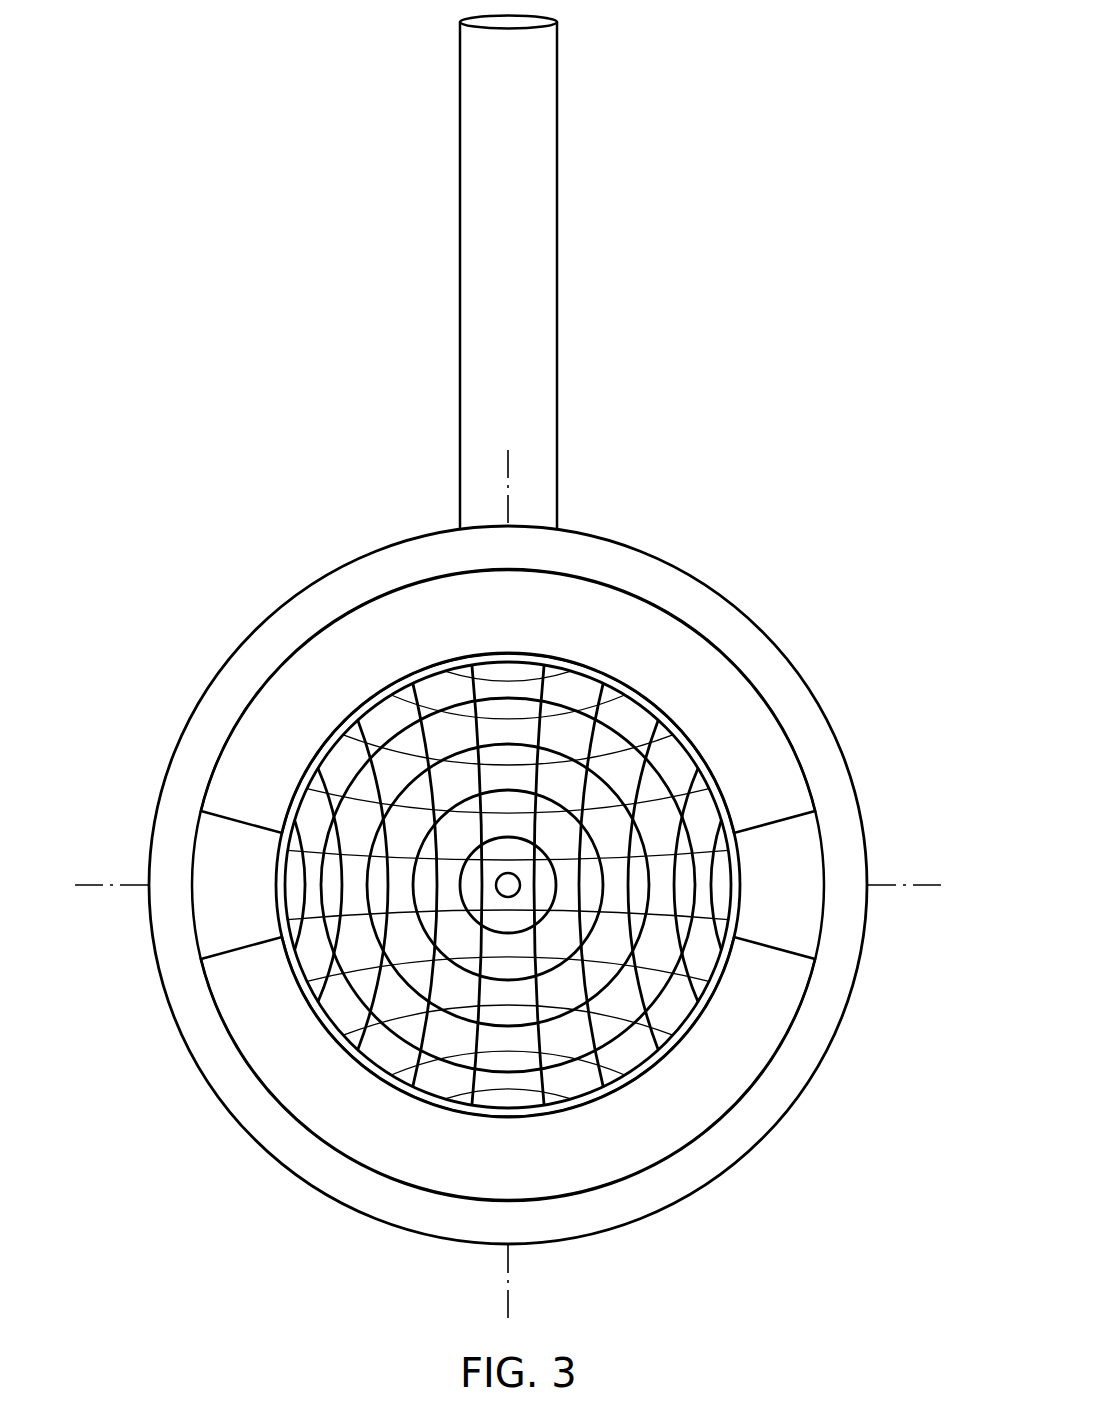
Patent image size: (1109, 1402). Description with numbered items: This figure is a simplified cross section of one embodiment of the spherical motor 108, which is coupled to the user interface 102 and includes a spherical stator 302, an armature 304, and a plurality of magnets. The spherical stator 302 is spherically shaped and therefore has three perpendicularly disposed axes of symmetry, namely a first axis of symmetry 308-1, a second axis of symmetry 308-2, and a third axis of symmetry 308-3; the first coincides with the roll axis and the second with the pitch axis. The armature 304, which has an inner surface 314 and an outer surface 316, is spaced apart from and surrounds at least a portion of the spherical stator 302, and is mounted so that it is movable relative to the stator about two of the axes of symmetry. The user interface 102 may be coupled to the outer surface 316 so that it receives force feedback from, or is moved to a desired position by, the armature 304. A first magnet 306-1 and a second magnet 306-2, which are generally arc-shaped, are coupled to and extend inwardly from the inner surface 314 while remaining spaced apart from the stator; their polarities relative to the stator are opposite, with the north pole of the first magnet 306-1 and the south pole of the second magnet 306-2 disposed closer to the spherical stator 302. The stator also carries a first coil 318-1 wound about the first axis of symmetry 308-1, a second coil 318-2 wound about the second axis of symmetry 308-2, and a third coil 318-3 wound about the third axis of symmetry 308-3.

The user interface 102 is at (557, 196).
The spherical motor 108 is at (877, 622).
The spherical stator 302 is at (428, 672).
The armature 304 is at (702, 577).
The first magnet 306-1 is at (326, 645).
The second magnet 306-2 is at (698, 1128).
The first axis of symmetry 308-1 is at (521, 885).
The second axis of symmetry 308-2 is at (922, 884).
The third axis of symmetry 308-3 is at (510, 1268).
The inner surface 314 is at (571, 576).
The outer surface 316 is at (759, 623).
The first coil 318-1 is at (570, 706).
The second coil 318-2 is at (713, 884).
The third coil 318-3 is at (459, 1100).